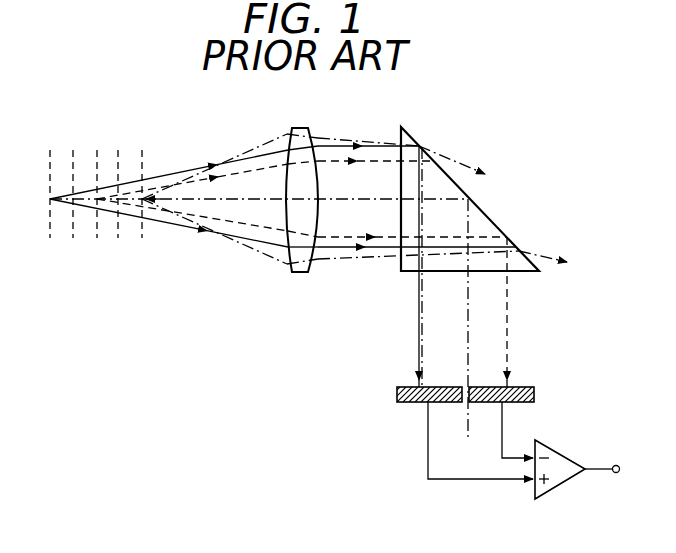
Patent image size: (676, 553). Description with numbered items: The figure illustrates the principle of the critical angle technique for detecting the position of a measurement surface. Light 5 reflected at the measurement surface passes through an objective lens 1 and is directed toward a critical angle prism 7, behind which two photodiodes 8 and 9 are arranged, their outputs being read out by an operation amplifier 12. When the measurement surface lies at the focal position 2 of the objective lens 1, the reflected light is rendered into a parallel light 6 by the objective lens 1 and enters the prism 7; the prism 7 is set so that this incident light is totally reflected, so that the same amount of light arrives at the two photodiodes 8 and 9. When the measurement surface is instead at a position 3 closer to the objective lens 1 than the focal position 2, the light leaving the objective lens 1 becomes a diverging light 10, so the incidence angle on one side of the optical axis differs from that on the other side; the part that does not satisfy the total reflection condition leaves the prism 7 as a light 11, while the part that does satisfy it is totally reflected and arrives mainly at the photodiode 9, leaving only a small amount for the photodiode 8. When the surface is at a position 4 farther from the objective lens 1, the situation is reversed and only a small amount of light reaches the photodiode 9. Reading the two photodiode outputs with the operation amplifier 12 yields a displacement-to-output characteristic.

The objective lens 1 is at (297, 273).
The focal position 2 is at (97, 227).
The position closer to the objective lens 3 is at (143, 232).
The position farther from the objective lens 4 is at (48, 225).
The light reflected at the measurement surface 5 is at (238, 160).
The parallel light 6 is at (343, 146).
The critical angle prism 7 is at (401, 258).
The photodiode 8 is at (397, 390).
The photodiode 9 is at (534, 390).
The diverging light 10 is at (372, 161).
The light traveling outside the prism 11 is at (457, 166).
The operation amplifier 12 is at (556, 488).